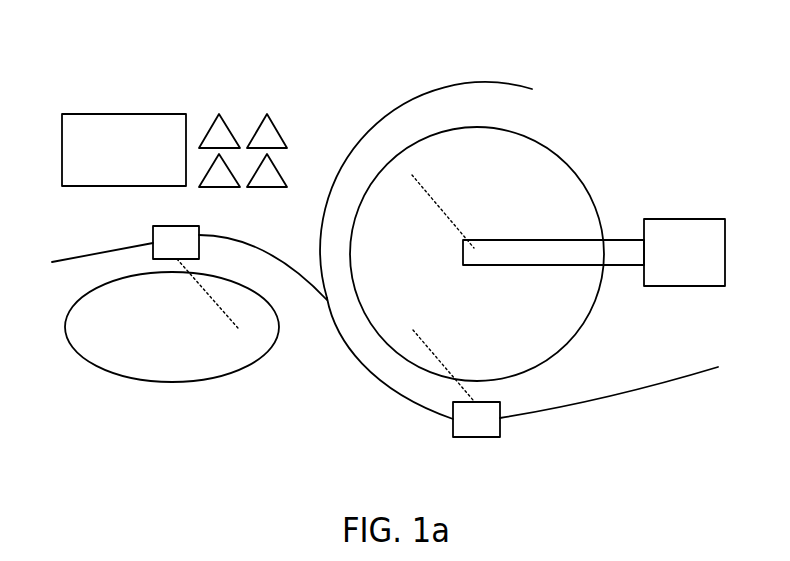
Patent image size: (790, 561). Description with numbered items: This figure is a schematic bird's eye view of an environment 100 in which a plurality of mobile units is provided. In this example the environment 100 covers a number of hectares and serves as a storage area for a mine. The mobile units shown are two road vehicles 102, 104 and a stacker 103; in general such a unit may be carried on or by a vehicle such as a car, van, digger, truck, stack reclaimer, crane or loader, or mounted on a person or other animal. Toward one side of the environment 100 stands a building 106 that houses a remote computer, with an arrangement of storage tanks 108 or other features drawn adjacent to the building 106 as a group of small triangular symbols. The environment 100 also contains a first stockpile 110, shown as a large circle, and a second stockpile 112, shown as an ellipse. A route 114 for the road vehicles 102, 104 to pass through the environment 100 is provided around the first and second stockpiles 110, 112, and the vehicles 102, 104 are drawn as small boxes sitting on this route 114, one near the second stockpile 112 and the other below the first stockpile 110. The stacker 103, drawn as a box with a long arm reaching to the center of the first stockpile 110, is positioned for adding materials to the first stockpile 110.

The environment 100 is at (692, 75).
The road vehicle 102 is at (155, 227).
The stacker 103 is at (688, 218).
The road vehicle 104 is at (483, 437).
The building 106 is at (97, 113).
The storage tanks 108 is at (267, 113).
The first stockpile 110 is at (585, 130).
The second stockpile 112 is at (82, 360).
The route 114 is at (452, 83).